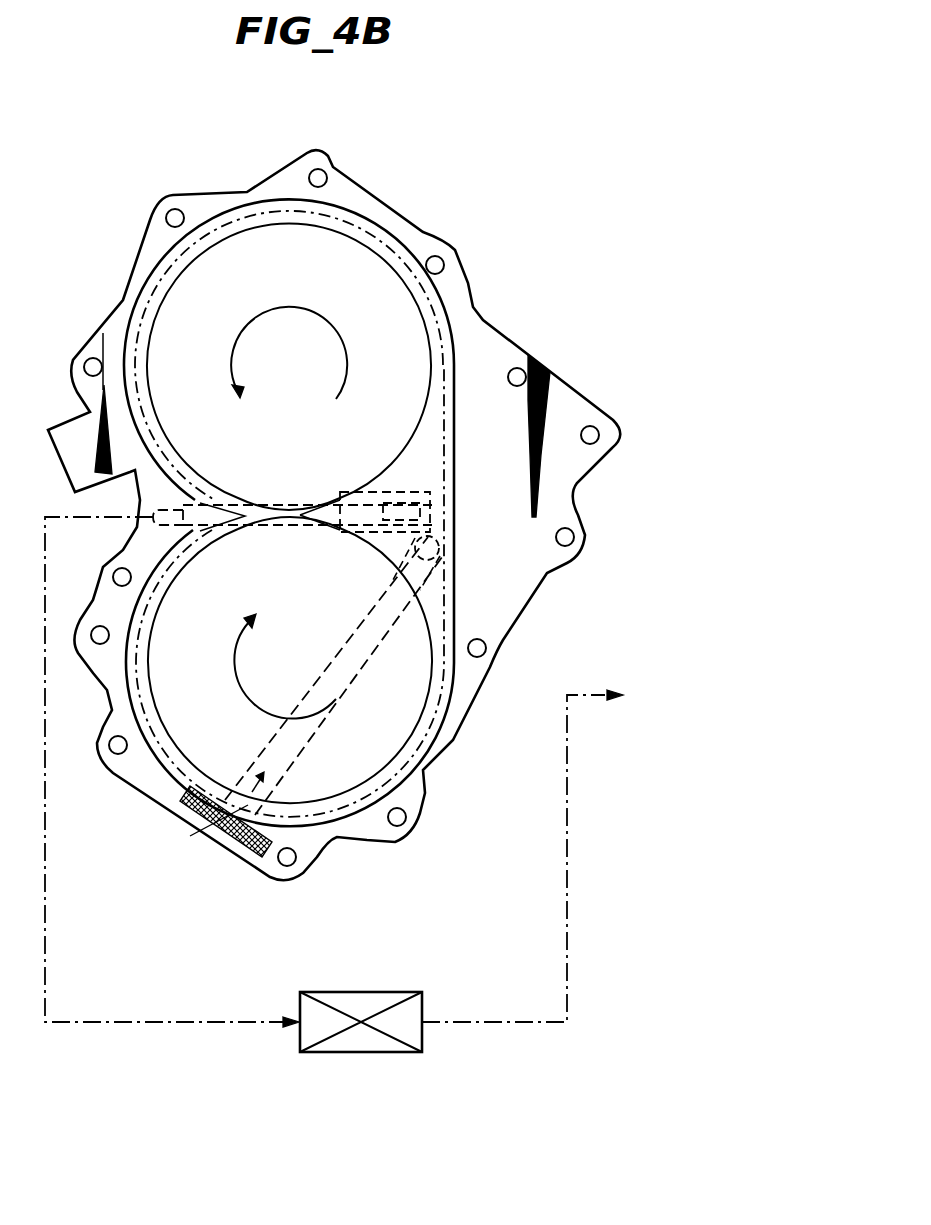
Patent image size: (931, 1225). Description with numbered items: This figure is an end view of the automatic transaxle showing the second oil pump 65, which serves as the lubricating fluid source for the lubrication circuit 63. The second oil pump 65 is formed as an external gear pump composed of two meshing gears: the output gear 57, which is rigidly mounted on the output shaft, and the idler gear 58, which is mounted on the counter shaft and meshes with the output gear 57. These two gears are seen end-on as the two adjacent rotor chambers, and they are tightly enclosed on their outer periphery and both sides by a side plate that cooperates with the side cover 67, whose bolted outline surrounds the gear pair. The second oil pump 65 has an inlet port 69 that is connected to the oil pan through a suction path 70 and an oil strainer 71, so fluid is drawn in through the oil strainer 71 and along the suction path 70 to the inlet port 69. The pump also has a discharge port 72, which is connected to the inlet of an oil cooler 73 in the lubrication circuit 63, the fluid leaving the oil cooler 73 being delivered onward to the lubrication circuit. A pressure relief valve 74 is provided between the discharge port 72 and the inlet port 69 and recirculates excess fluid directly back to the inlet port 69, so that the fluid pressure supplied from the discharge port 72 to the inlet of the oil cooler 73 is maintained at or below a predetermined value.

The output gear 57 is at (253, 218).
The idler gear 58 is at (423, 772).
The lubrication circuit 63 is at (570, 800).
The second oil pump 65 is at (148, 294).
The side cover 67 is at (466, 712).
The inlet port 69 is at (437, 554).
The suction path 70 is at (272, 757).
The oil strainer 71 is at (232, 843).
The discharge port 72 is at (225, 528).
The oil cooler 73 is at (373, 990).
The pressure relief valve 74 is at (382, 490).